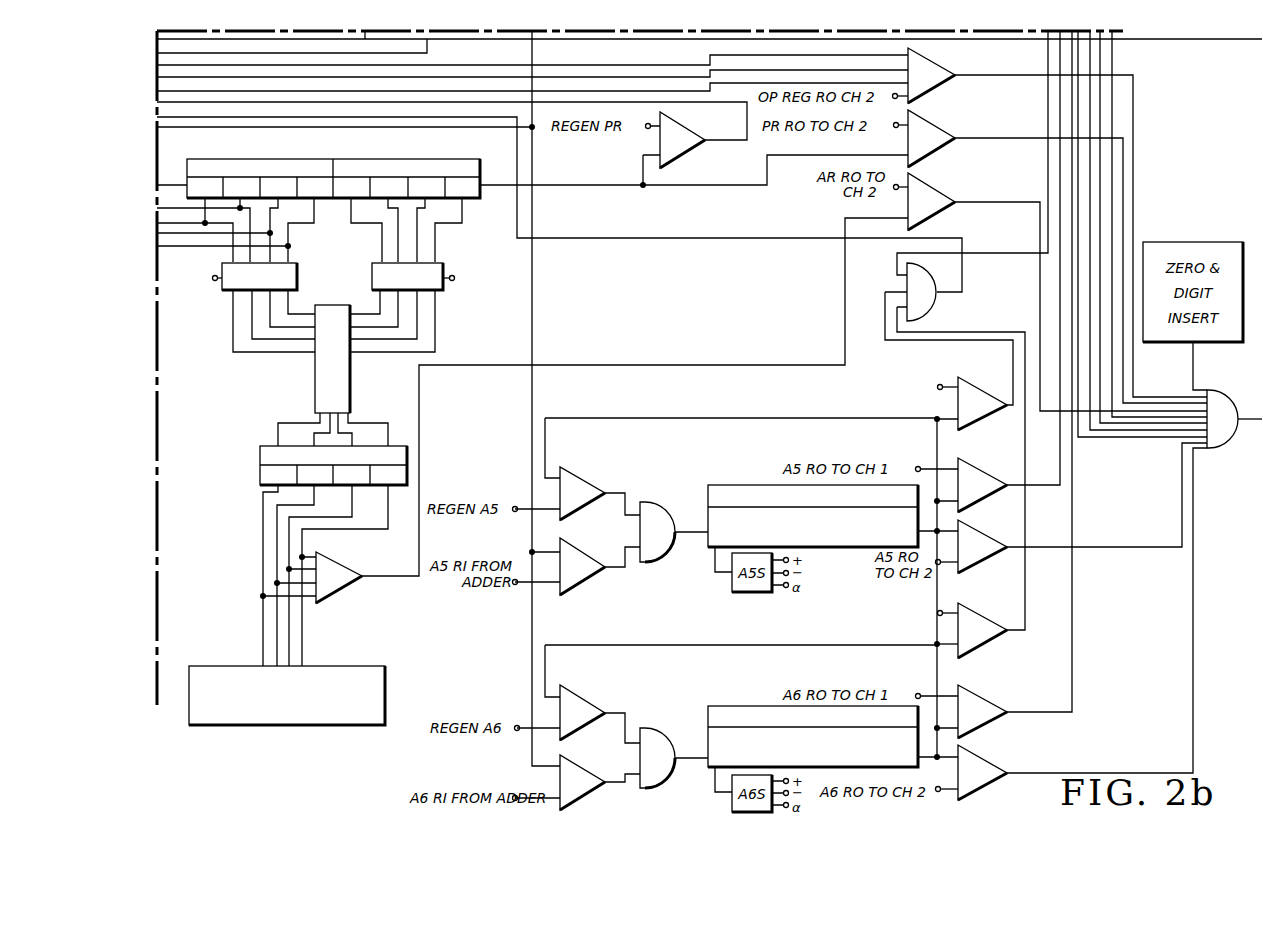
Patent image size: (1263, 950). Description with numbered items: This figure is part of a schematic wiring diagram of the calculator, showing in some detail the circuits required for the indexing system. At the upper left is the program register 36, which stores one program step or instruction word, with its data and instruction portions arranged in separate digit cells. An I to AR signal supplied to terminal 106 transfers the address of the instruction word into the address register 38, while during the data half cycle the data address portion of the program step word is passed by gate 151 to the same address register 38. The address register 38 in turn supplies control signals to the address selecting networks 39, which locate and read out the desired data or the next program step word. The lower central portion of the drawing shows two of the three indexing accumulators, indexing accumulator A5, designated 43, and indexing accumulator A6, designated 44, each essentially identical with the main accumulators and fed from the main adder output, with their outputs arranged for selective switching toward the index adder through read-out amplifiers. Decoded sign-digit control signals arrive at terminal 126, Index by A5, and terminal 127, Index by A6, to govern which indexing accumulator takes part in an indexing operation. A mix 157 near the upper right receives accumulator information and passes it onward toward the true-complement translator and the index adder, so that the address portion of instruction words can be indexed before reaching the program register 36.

The program register 36 is at (267, 158).
The gate 151 is at (221, 271).
The terminal 106 is at (453, 275).
The address register 38 is at (260, 475).
The address selecting networks 39 is at (242, 726).
The indexing accumulator A5 43 is at (736, 486).
The indexing accumulator A6 44 is at (728, 707).
The terminal 126 is at (941, 384).
The terminal 127 is at (941, 610).
The mix 157 is at (934, 288).